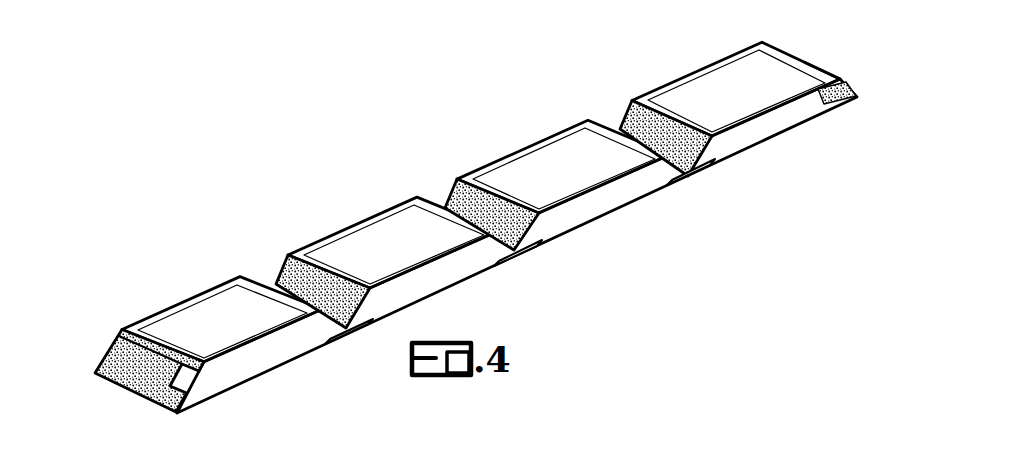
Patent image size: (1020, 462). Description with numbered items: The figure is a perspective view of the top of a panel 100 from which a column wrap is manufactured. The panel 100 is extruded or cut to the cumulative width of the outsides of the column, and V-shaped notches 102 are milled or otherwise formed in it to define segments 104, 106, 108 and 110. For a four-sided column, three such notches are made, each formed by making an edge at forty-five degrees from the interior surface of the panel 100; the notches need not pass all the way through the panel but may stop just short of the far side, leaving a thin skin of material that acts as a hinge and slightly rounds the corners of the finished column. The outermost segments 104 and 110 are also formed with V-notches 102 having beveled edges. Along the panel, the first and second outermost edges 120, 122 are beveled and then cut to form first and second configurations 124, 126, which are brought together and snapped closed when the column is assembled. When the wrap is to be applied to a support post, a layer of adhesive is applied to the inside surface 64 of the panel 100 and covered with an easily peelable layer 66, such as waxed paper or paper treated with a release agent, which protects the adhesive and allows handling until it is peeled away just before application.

The panel 100 is at (473, 235).
The inside surface 64 is at (247, 279).
The peelable layer 66 is at (217, 315).
The V-shaped notch 102 is at (274, 274).
The segment 104 is at (222, 337).
The segment 106 is at (433, 280).
The segment 108 is at (587, 207).
The segment 110 is at (765, 128).
The first outermost edge 120 is at (129, 383).
The second outermost edge 122 is at (850, 83).
The first configuration 124 is at (107, 352).
The second configuration 126 is at (838, 80).